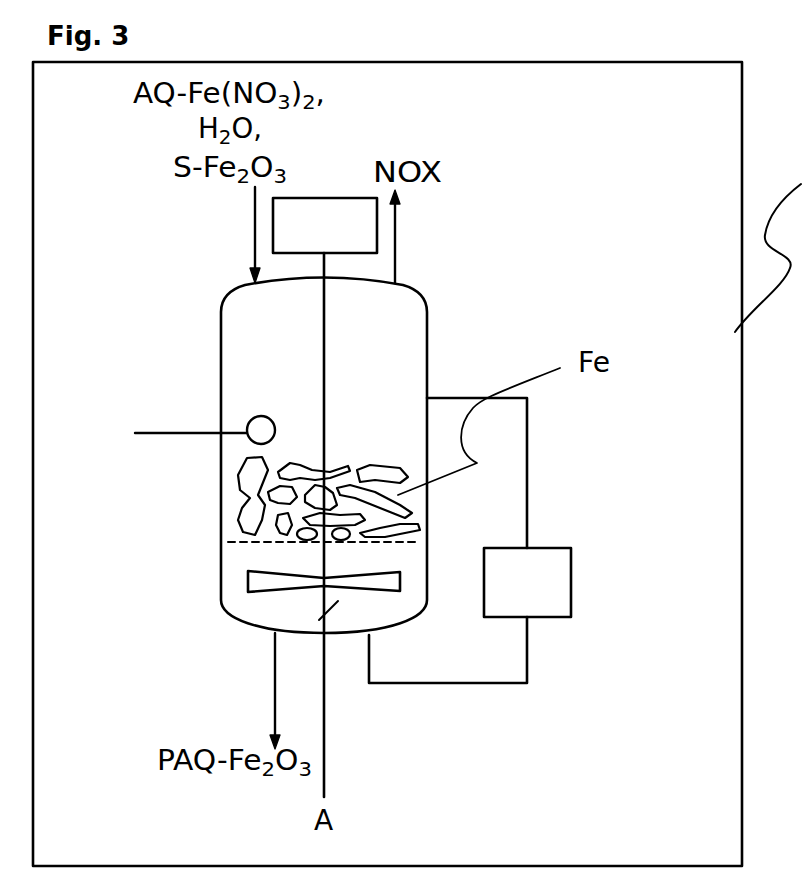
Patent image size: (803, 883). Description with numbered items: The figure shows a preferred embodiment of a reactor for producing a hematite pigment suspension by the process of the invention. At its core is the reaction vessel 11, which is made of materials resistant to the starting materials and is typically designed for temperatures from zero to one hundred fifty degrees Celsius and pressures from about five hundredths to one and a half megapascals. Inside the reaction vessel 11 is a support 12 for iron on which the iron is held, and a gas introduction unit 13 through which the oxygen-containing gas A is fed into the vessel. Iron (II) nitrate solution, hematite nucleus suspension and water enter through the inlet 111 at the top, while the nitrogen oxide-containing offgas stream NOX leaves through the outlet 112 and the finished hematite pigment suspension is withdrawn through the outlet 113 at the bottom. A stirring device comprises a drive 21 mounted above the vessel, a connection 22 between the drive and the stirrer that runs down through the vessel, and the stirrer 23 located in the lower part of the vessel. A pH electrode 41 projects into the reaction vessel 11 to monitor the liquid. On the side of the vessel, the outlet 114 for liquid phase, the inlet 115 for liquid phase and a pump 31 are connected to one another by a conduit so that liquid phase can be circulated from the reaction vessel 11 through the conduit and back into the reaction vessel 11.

The reaction vessel 11 is at (220, 392).
The support for iron 12 is at (247, 545).
The gas introduction unit 13 is at (308, 602).
The drive 21 is at (318, 222).
The connection between drive and stirrer 22 is at (318, 372).
The stirrer 23 is at (284, 586).
The pump 31 is at (527, 582).
The pH electrode 41 is at (257, 433).
The inlet for iron (II) nitrate solution, hematite nucleus suspension 111 is at (252, 281).
The outlet for NOX 112 is at (400, 283).
The outlet for hematite pigment suspension 113 is at (273, 635).
The outlet for liquid phase 114 is at (428, 396).
The inlet for liquid phase 115 is at (369, 635).